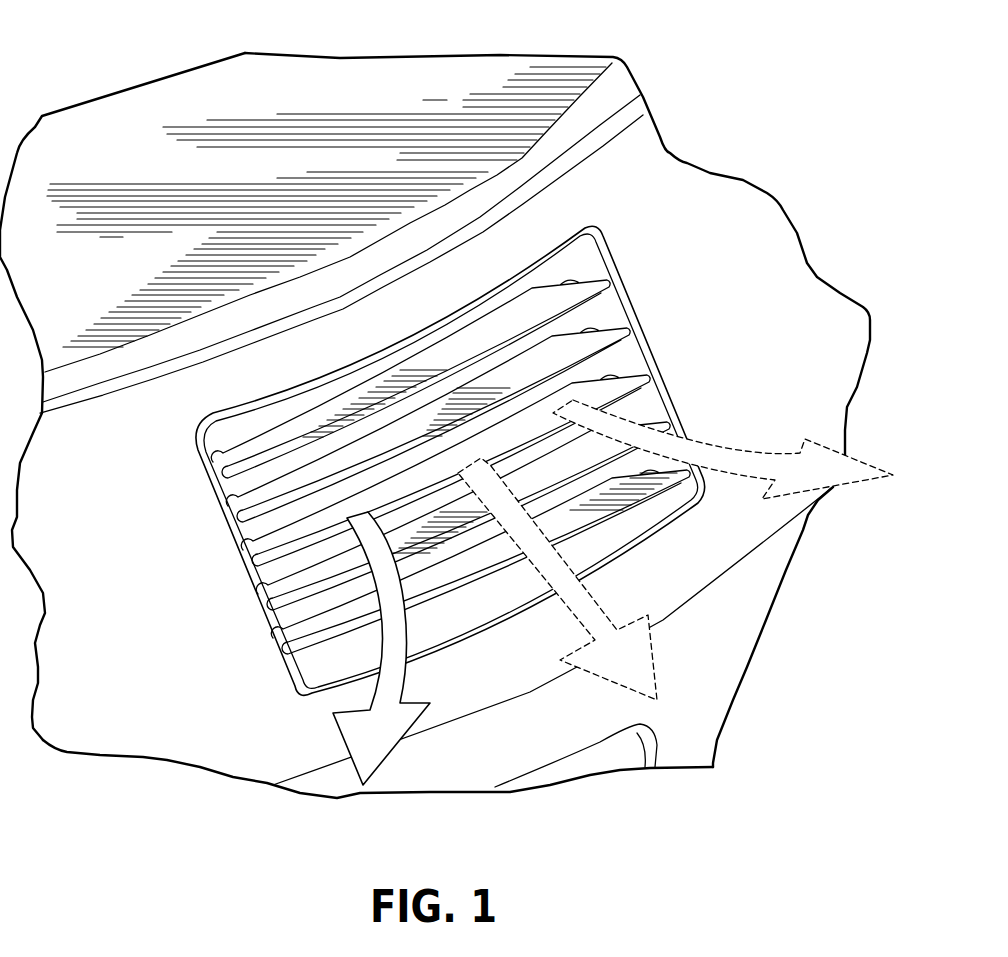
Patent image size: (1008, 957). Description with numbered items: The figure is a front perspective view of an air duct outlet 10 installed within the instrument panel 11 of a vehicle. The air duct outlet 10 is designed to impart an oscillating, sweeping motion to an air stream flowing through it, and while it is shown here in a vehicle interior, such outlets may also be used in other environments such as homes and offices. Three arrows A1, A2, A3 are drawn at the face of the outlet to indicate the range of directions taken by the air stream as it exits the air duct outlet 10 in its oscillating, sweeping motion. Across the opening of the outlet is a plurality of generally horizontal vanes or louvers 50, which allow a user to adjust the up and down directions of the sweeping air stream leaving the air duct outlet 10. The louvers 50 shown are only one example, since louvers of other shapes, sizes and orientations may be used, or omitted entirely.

The air duct outlet 10 is at (670, 232).
The instrument panel 11 is at (168, 730).
The louvers 50 is at (280, 628).
The arrow A1 is at (360, 745).
The arrow A2 is at (649, 676).
The arrow A3 is at (853, 480).